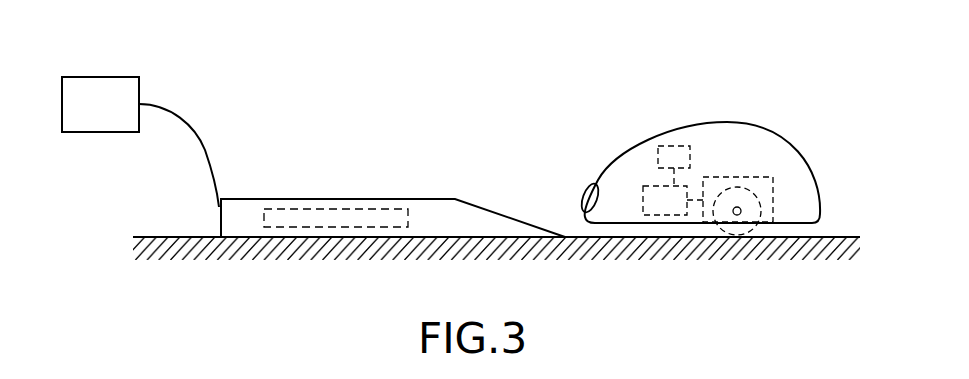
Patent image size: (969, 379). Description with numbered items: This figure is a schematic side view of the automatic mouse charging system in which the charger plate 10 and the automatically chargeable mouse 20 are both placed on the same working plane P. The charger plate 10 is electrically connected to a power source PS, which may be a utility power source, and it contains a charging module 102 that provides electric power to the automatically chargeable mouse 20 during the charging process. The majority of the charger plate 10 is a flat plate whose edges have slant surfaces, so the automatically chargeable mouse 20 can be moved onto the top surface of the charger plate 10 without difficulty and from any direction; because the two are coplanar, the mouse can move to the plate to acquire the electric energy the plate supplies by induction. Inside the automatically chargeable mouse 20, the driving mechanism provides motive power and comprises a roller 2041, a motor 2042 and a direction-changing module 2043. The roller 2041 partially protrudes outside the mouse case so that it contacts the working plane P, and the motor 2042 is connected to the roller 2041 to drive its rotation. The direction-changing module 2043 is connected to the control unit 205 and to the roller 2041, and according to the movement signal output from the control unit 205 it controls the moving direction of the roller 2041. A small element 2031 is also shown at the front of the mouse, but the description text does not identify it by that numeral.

The power source PS is at (99, 86).
The working plane P is at (170, 237).
The charger plate 10 is at (310, 197).
The charging module 102 is at (317, 219).
The automatically chargeable mouse 20 is at (762, 122).
The front pad 2031 is at (588, 216).
The control unit 205 is at (675, 147).
The motor 2042 is at (655, 188).
The direction-changing module 2043 is at (773, 177).
The roller 2041 is at (740, 230).